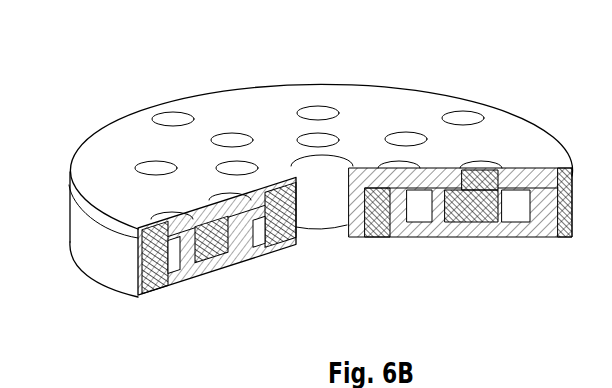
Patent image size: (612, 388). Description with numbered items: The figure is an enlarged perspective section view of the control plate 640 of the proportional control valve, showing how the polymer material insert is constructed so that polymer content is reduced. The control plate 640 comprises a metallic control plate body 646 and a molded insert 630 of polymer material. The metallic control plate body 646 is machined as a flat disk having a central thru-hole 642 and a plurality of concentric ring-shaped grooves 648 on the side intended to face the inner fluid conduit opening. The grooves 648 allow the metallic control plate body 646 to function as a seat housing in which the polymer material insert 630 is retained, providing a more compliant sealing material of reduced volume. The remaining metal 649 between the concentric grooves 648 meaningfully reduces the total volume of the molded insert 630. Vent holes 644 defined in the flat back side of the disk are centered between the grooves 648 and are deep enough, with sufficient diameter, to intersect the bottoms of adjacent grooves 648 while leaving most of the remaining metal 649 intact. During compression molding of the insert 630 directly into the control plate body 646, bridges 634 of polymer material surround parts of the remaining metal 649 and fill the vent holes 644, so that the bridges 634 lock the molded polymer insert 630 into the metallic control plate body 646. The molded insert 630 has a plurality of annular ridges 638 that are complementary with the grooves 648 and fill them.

The control plate 640 is at (131, 71).
The bridges 634 is at (462, 166).
The vent holes 644 is at (495, 196).
The central thru-hole 642 is at (350, 197).
The metallic control plate body 646 is at (148, 266).
The molded insert 630 is at (190, 262).
The remaining metal 649 is at (270, 250).
The annular ridges 638 is at (449, 237).
The concentric ring-shaped grooves 648 is at (519, 238).